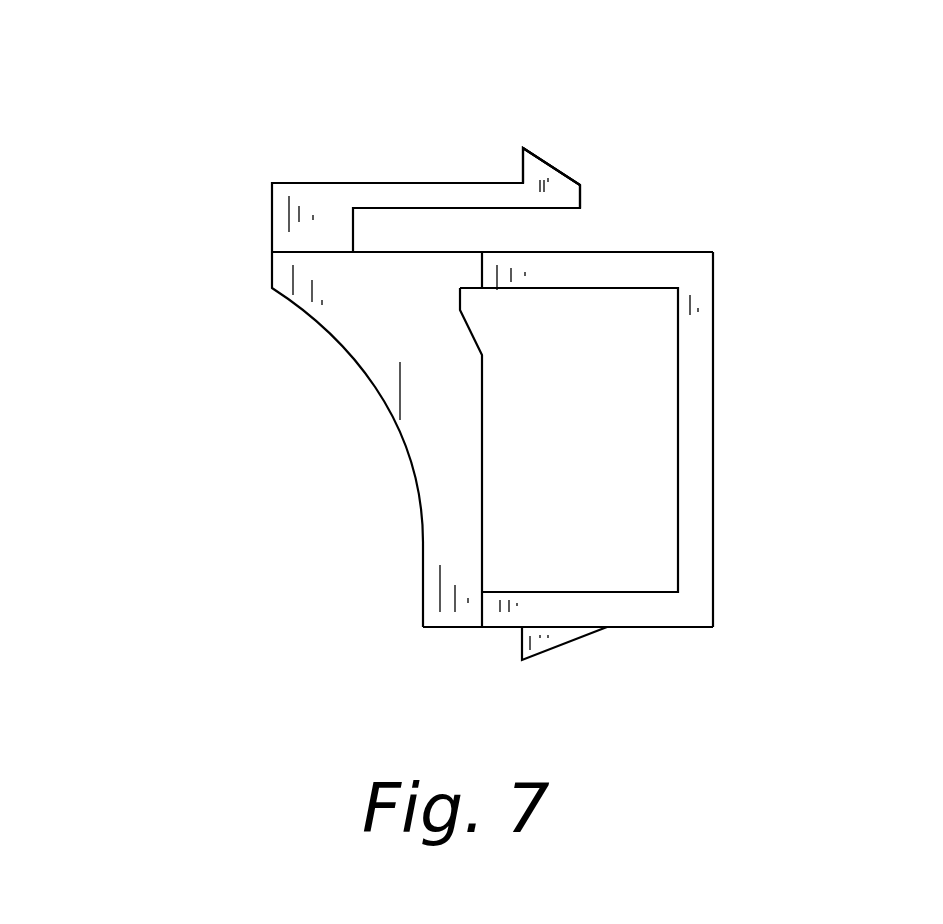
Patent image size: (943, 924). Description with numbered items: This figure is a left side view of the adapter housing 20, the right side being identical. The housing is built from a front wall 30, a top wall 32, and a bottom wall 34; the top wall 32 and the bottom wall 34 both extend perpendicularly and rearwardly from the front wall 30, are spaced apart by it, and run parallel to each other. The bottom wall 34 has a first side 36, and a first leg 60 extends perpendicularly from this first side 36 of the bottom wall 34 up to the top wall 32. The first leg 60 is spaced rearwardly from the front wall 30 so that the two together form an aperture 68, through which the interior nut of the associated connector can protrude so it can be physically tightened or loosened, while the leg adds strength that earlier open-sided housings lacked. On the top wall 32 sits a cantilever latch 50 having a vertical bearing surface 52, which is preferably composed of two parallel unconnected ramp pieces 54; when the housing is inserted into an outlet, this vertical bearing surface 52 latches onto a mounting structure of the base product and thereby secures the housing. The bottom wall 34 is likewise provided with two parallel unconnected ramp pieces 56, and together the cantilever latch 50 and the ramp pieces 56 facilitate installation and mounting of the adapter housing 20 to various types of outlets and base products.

The adapter housing 20 is at (242, 126).
The front wall 30 is at (702, 448).
The top wall 32 is at (628, 262).
The bottom wall 34 is at (662, 610).
The first side 36 is at (502, 615).
The cantilever latch 50 is at (413, 193).
The vertical bearing surface 52 is at (523, 168).
The ramp pieces 54 is at (557, 165).
The ramp pieces 56 is at (547, 652).
The first leg 60 is at (437, 422).
The aperture 68 is at (630, 391).